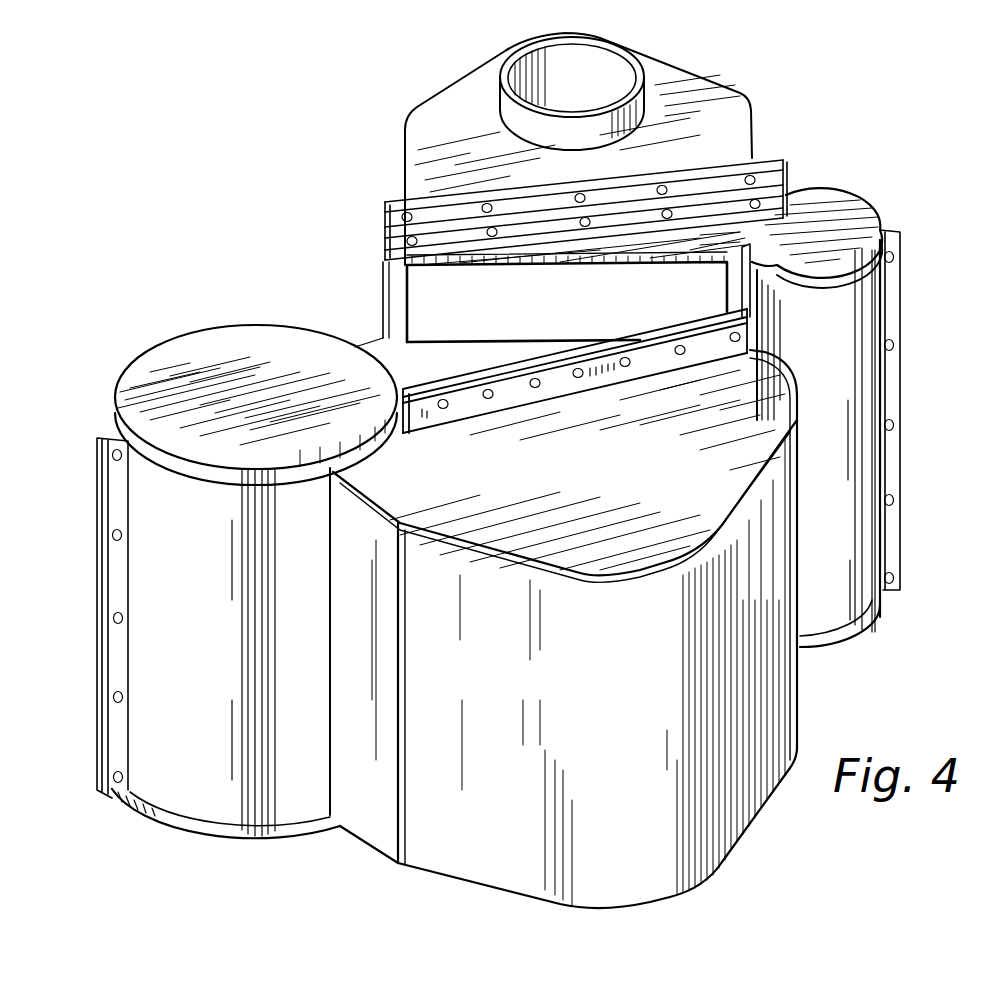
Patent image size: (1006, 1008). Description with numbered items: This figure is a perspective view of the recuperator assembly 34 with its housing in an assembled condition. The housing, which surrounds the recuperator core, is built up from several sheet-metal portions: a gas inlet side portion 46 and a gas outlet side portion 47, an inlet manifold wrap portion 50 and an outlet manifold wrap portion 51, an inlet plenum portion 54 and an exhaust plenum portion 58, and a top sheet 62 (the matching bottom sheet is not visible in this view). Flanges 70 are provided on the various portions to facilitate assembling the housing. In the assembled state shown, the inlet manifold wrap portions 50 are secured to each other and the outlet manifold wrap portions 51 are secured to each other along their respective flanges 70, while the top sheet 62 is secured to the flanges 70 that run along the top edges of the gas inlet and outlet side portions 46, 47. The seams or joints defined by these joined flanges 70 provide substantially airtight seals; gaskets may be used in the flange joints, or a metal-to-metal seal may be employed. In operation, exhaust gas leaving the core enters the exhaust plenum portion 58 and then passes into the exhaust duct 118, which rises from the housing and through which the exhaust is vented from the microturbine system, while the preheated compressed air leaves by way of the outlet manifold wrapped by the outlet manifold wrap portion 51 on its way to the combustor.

The recuperator assembly 34 is at (251, 306).
The gas inlet side portion 46 is at (650, 392).
The gas outlet side portion 47 is at (808, 189).
The inlet manifold wrap portion 50 is at (850, 465).
The outlet manifold wrap portion 51 is at (153, 663).
The inlet plenum portion 54 is at (560, 698).
The exhaust plenum portion 58 is at (738, 99).
The top sheet 62 is at (423, 278).
The flanges 70 is at (744, 162).
The exhaust duct 118 is at (615, 72).